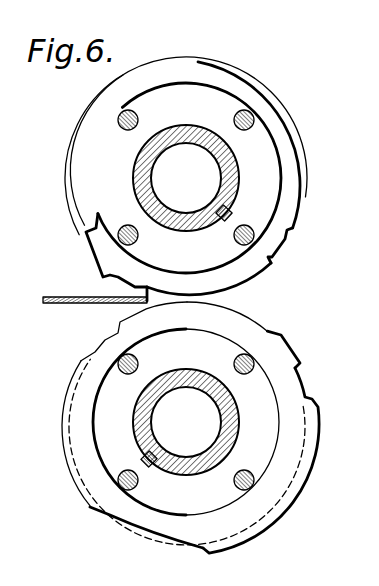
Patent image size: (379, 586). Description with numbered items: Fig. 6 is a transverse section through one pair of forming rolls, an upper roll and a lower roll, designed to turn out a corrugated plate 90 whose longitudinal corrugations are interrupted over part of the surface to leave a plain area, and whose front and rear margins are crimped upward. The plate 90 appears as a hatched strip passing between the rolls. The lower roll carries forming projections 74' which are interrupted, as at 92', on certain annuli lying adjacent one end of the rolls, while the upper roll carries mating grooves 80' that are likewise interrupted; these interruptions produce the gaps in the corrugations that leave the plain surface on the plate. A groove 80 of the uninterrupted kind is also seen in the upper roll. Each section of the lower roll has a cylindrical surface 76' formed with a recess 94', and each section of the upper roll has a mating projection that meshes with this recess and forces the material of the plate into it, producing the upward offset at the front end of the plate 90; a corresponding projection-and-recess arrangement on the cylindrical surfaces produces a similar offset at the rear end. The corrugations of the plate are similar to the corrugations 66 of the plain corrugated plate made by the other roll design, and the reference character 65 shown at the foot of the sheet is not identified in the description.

The grooves 80' is at (236, 181).
The front coupling disc 80 is at (152, 178).
The plate 90 is at (77, 307).
The cylindrical surface 76' is at (190, 423).
The recess 94' is at (203, 335).
The forming projections 74' is at (184, 452).
The interruption of the forming projections 92' is at (146, 530).
The element of adjacent figure (partially shown) 65 is at (330, 585).
The corrugations 66 is at (49, 582).